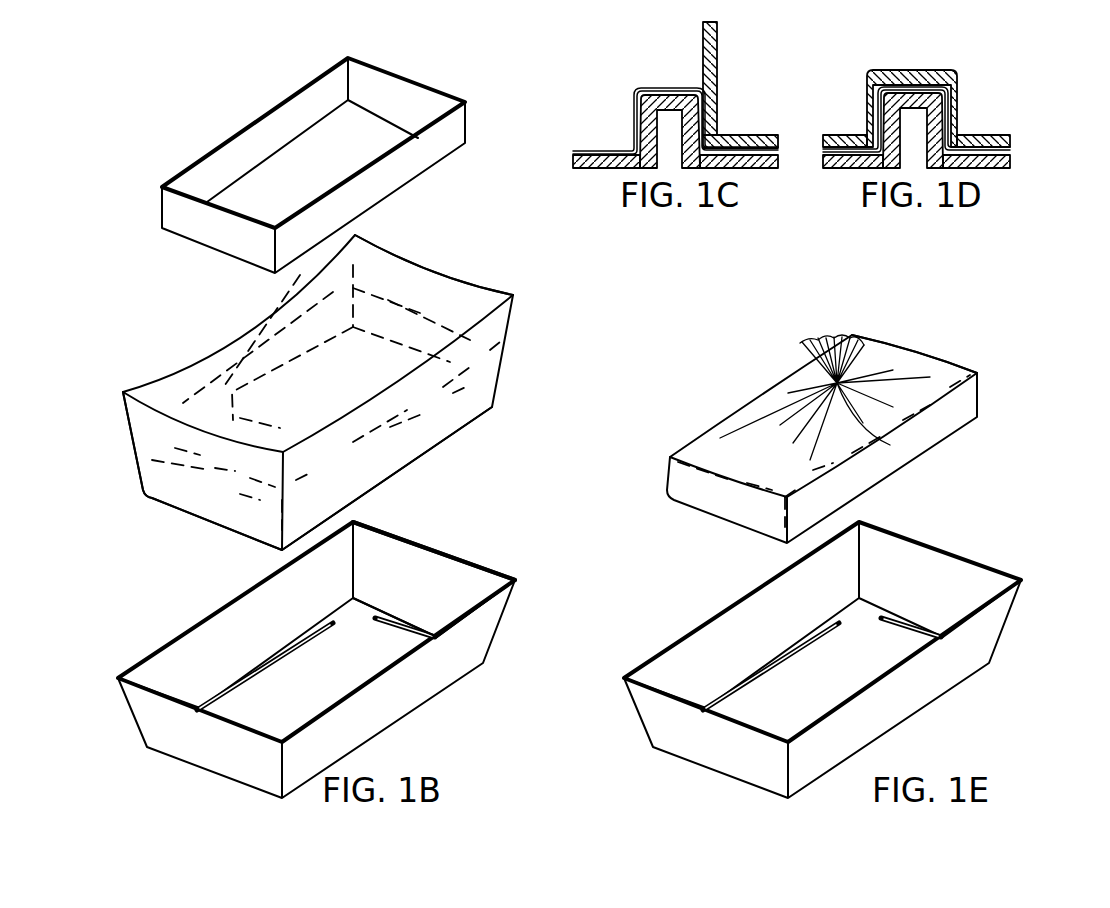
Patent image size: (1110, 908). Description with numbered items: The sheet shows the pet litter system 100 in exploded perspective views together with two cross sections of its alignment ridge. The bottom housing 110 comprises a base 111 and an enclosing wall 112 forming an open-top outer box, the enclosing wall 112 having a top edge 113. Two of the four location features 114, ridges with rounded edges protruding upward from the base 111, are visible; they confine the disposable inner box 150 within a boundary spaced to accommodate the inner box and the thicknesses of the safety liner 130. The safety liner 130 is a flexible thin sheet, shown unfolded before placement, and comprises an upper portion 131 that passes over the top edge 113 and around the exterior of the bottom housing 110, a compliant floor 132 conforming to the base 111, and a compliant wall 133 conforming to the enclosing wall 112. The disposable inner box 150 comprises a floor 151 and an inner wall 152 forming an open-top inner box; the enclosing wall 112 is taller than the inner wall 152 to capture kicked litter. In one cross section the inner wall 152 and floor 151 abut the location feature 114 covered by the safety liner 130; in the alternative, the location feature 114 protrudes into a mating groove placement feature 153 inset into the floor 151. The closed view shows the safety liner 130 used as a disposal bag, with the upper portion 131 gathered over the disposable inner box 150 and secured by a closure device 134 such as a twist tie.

In FIG. 1B, the pet litter system 100 is at (233, 60).
In FIG. 1E, the pet litter system 100 is at (795, 303).
In FIG. 1B, the bottom housing 110 is at (200, 607).
In FIG. 1E, the bottom housing 110 is at (700, 610).
In FIG. 1B, the base 111 is at (328, 678).
In FIG. 1C, the base 111 is at (628, 160).
In FIG. 1D, the base 111 is at (1017, 157).
In FIG. 1B, the enclosing wall 112 is at (428, 598).
In FIG. 1B, the top edge 113 is at (360, 523).
In FIG. 1B, the location feature 114 is at (400, 618).
In FIG. 1C, the location feature 114 is at (660, 90).
In FIG. 1D, the location feature 114 is at (898, 100).
In FIG. 1B, the safety liner 130 is at (230, 327).
In FIG. 1C, the safety liner 130 is at (667, 98).
In FIG. 1D, the safety liner 130 is at (823, 152).
In FIG. 1E, the safety liner 130 is at (742, 347).
In FIG. 1B, the upper portion 131 is at (212, 443).
In FIG. 1E, the upper portion 131 is at (863, 348).
In FIG. 1B, the compliant floor 132 is at (318, 402).
In FIG. 1B, the compliant wall 133 is at (402, 313).
In FIG. 1E, the closure device 134 is at (830, 383).
In FIG. 1B, the disposable inner box 150 is at (233, 123).
In FIG. 1B, the floor 151 is at (352, 145).
In FIG. 1C, the floor 151 is at (735, 135).
In FIG. 1D, the floor 151 is at (840, 137).
In FIG. 1B, the inner wall 152 is at (408, 105).
In FIG. 1C, the inner wall 152 is at (700, 80).
In FIG. 1D, the placement feature 153 is at (932, 88).